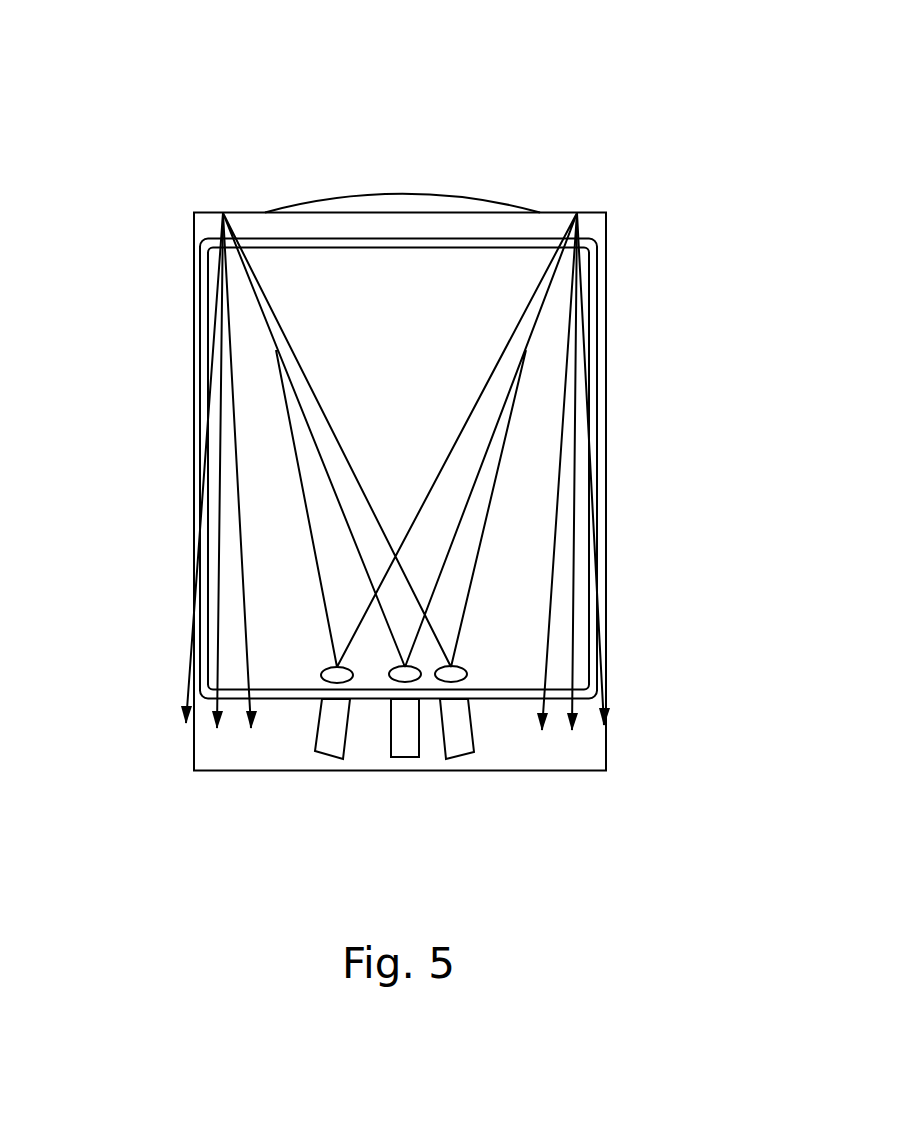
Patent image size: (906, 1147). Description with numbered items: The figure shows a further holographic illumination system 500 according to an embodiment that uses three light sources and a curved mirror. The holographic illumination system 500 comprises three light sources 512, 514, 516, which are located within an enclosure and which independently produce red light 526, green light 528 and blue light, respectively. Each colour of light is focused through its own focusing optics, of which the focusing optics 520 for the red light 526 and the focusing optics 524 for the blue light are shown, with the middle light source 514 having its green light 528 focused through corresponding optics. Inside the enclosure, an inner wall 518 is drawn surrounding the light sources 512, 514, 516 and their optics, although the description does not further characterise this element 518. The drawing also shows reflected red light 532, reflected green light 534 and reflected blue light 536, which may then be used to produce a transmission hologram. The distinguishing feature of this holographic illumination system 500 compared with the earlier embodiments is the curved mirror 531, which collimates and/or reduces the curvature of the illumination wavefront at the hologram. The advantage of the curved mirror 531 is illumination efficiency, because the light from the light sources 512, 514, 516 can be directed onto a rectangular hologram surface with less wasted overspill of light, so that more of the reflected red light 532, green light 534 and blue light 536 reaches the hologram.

The holographic illumination system 500 is at (552, 95).
The light source 512 is at (337, 743).
The light source 514 is at (405, 742).
The light source 516 is at (456, 743).
The inner reflector wall 518 is at (583, 242).
The focusing optics 520 is at (333, 666).
The focusing optics 524 is at (458, 667).
The red light 526 is at (333, 532).
The green light 528 is at (255, 233).
The curved mirror 531 is at (398, 193).
The reflected red light 532 is at (233, 447).
The reflected green light 534 is at (217, 535).
The reflected blue light 536 is at (182, 713).